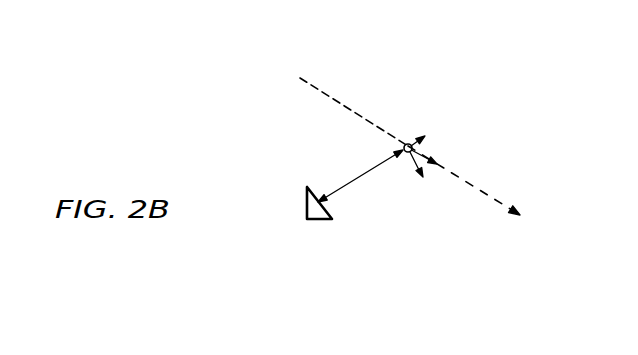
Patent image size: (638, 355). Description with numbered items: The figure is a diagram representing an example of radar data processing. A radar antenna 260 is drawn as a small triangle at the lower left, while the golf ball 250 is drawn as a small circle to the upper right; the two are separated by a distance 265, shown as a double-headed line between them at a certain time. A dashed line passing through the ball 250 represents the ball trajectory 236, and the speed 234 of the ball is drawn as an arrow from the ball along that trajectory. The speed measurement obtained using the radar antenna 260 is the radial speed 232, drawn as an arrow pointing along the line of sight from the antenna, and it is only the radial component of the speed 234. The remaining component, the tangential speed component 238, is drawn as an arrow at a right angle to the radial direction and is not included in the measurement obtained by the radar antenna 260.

The radial speed 232 is at (407, 143).
The speed of the ball 234 is at (434, 157).
The ball trajectory 236 is at (334, 100).
The tangential speed component 238 is at (415, 166).
The golf ball 250 is at (403, 147).
The radar antenna 260 is at (305, 220).
The distance 265 is at (345, 185).